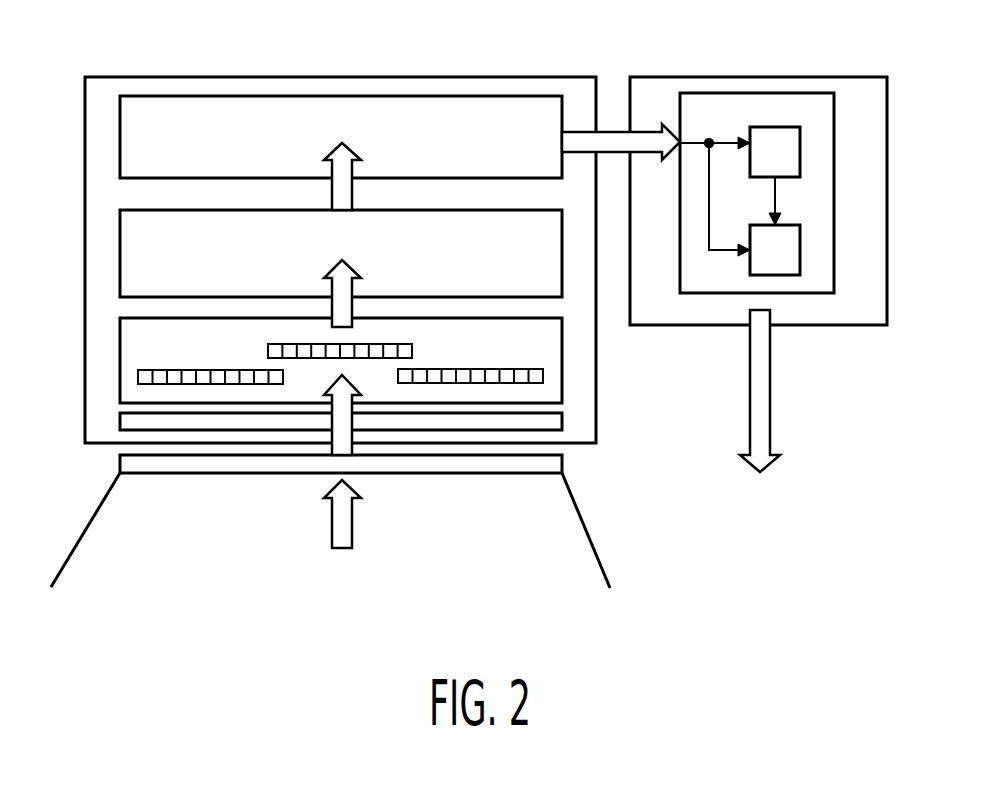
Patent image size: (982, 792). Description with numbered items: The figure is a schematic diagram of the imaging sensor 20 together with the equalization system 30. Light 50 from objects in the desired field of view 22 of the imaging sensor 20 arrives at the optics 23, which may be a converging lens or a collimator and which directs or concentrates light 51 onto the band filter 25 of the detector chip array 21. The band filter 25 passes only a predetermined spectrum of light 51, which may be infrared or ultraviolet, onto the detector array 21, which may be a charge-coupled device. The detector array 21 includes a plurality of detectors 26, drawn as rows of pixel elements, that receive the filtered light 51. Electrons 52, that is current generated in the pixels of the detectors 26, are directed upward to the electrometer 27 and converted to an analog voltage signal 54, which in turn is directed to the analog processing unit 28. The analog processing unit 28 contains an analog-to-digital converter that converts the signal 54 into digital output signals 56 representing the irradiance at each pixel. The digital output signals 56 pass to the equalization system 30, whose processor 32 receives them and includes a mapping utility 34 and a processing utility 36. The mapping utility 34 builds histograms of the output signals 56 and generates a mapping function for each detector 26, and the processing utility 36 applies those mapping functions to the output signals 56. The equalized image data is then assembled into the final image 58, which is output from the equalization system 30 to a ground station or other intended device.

The imaging sensor 20 is at (505, 83).
The detector chip array 21 is at (563, 332).
The field of view 22 is at (585, 555).
The optics 23 is at (563, 462).
The band filter 25 is at (563, 422).
The detectors 26 is at (143, 372).
The electrometer 27 is at (130, 232).
The analog processing unit 28 is at (210, 113).
The equalization system 30 is at (670, 83).
The processor 32 is at (808, 93).
The mapping utility 34 is at (765, 127).
The processing utility 36 is at (803, 273).
The light 50 is at (348, 530).
The light 51 is at (338, 420).
The electrons 52 is at (353, 263).
The analog voltage signal 54 is at (353, 152).
The digital output signals 56 is at (612, 132).
The final image 58 is at (772, 398).